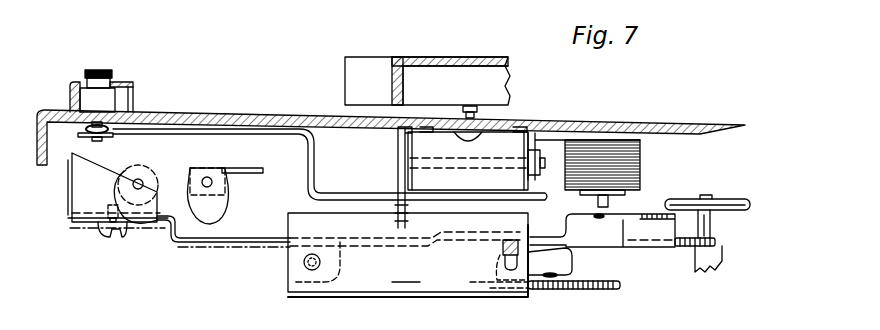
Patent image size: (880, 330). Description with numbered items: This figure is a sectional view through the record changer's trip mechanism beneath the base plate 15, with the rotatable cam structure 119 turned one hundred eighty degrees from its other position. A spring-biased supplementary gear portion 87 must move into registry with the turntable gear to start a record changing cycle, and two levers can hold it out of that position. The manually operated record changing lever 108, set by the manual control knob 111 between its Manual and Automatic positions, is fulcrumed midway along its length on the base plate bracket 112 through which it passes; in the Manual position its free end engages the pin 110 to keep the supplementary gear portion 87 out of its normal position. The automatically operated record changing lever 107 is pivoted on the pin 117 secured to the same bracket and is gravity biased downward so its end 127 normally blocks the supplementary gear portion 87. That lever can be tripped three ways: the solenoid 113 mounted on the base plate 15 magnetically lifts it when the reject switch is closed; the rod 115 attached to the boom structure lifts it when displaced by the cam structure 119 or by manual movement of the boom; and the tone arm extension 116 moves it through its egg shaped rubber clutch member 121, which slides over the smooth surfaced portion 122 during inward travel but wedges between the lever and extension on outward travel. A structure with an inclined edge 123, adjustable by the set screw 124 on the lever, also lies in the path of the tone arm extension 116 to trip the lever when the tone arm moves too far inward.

The base plate 15 is at (700, 126).
The supplementary gear portion 87 is at (718, 262).
The automatically operated record changing lever 107 is at (204, 250).
The manually operated record changing lever 108 is at (318, 153).
The pin 110 is at (712, 229).
The manual control knob 111 is at (100, 70).
The base plate bracket 112 is at (408, 255).
The solenoid 113 is at (643, 156).
The rod 115 is at (508, 244).
The tone arm extension 116 is at (241, 166).
The pin 117 is at (305, 267).
The rotatable cam structure 119 is at (546, 277).
The egg shaped rubber clutch member 121 is at (155, 182).
The smooth surfaced portion 122 is at (98, 212).
The inclined edge 123 is at (106, 167).
The set screw 124 is at (118, 240).
The end of lever 127 is at (625, 236).